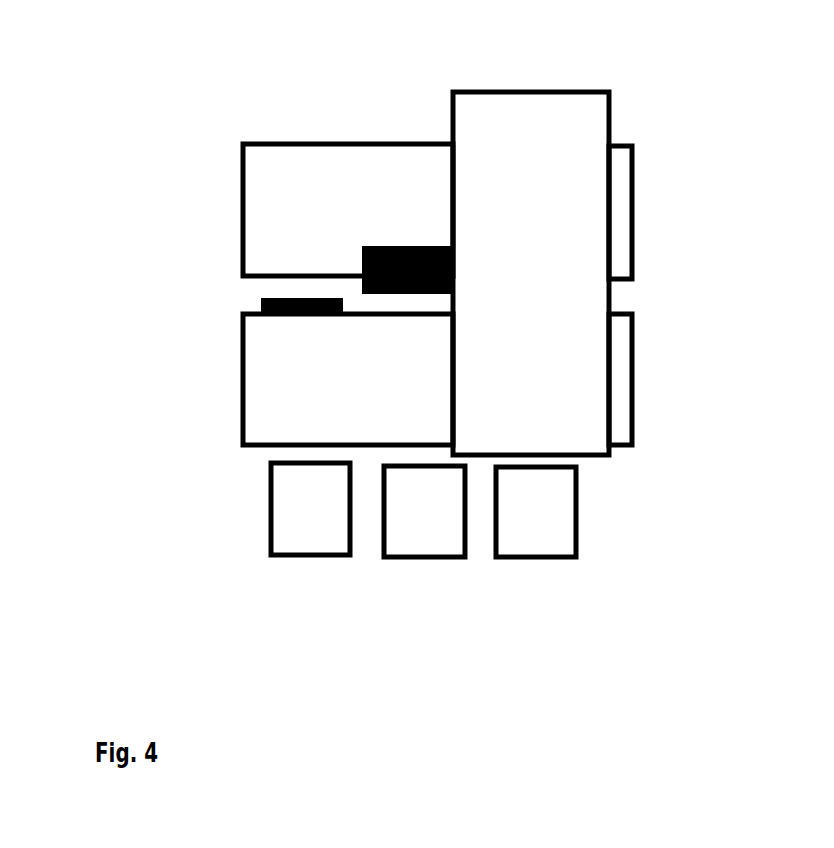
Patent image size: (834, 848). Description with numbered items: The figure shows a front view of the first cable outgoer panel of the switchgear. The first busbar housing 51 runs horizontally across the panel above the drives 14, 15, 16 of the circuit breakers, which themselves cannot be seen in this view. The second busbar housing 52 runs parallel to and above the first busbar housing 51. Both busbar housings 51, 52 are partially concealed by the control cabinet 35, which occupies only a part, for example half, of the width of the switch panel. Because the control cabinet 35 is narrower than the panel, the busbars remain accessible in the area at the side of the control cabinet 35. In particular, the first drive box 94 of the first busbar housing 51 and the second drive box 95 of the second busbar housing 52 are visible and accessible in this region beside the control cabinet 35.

The drive 14 is at (540, 535).
The drive 15 is at (421, 537).
The drive 16 is at (300, 530).
The control cabinet 35 is at (567, 213).
The first busbar housing 51 is at (280, 388).
The second busbar housing 52 is at (275, 215).
The first drive box 94 is at (262, 302).
The second drive box 95 is at (407, 246).